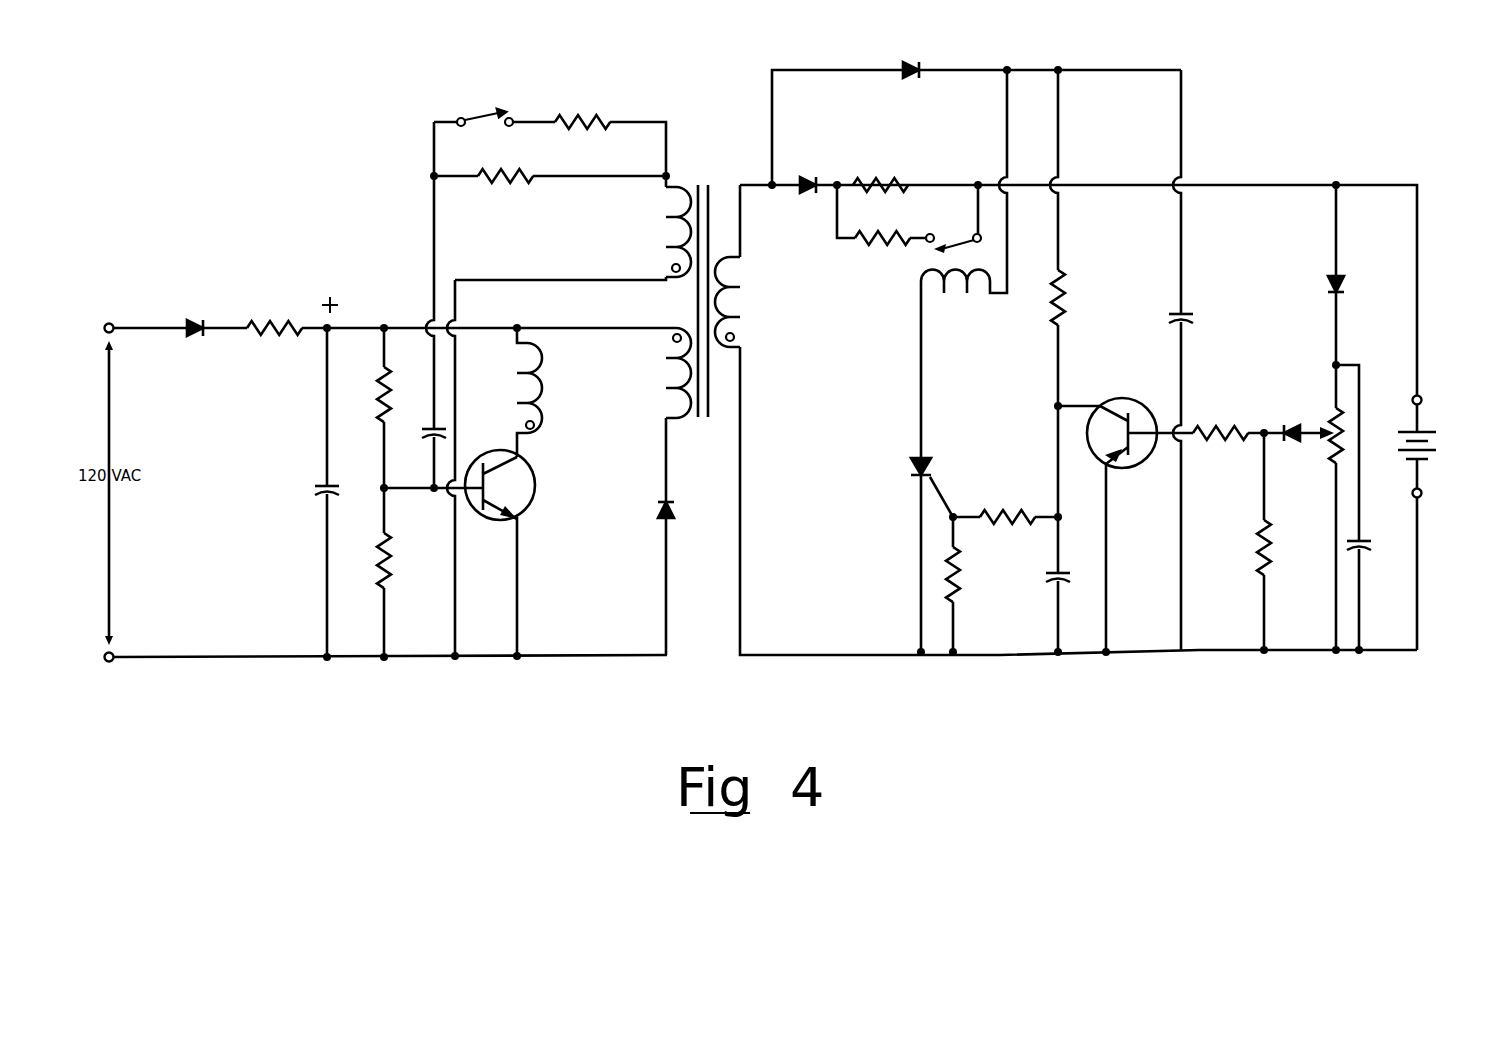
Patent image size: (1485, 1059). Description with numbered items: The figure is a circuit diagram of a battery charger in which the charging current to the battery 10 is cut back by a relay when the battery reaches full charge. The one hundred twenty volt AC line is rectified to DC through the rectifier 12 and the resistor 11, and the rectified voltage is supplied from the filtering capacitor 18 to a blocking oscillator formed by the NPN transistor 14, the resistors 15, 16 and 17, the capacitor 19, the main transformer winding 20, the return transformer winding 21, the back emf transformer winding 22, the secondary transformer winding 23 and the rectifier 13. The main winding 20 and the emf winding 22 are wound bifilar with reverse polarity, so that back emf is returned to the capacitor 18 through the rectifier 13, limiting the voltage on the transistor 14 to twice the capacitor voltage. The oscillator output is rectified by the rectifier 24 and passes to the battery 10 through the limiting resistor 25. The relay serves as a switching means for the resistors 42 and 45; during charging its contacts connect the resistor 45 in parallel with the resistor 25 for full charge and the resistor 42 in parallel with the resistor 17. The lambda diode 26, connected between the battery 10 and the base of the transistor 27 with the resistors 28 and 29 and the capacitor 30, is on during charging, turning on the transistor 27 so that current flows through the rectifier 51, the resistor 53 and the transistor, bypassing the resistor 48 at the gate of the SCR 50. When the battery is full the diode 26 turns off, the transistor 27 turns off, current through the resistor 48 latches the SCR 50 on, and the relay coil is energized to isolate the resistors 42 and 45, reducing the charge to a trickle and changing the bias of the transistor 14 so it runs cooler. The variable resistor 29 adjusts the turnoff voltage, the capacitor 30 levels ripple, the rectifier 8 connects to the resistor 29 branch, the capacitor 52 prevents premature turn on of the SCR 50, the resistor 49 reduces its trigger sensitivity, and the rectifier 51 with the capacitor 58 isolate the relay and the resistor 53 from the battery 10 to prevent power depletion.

The rectifier 8 is at (1342, 270).
The battery 10 is at (1434, 440).
The resistor 11 is at (283, 334).
The rectifier 12 is at (196, 320).
The rectifier 13 is at (654, 522).
The NPN transistor 14 is at (492, 524).
The resistor 15 is at (377, 396).
The resistor 16 is at (377, 550).
The resistor 17 is at (510, 182).
The filtering capacitor 18 is at (318, 503).
The capacitor 19 is at (426, 430).
The main transformer winding 20 is at (545, 386).
The return transformer winding 21 is at (662, 247).
The back emf transformer winding 22 is at (658, 409).
The secondary transformer winding 23 is at (748, 340).
The rectifier 24 is at (808, 200).
The limiting resistor 25 is at (893, 174).
The lambda diode 26 is at (1288, 426).
The NPN transistor 27 is at (1136, 472).
The resistor 28 is at (1209, 422).
The resistor 29 is at (1334, 460).
The capacitor 30 is at (1362, 556).
The resistor 42 is at (594, 112).
The resistor 45 is at (871, 244).
The resistor 48 is at (1006, 510).
The resistor 49 is at (964, 570).
The SCR 50 is at (929, 452).
The rectifier 51 is at (908, 81).
The capacitor 52 is at (1054, 589).
The resistor 53 is at (1066, 272).
The capacitor 58 is at (1190, 310).